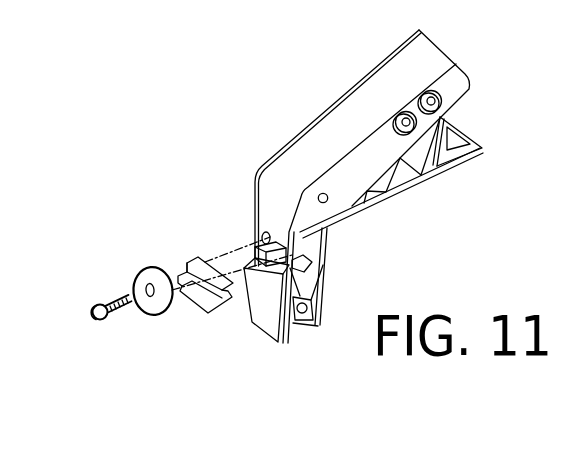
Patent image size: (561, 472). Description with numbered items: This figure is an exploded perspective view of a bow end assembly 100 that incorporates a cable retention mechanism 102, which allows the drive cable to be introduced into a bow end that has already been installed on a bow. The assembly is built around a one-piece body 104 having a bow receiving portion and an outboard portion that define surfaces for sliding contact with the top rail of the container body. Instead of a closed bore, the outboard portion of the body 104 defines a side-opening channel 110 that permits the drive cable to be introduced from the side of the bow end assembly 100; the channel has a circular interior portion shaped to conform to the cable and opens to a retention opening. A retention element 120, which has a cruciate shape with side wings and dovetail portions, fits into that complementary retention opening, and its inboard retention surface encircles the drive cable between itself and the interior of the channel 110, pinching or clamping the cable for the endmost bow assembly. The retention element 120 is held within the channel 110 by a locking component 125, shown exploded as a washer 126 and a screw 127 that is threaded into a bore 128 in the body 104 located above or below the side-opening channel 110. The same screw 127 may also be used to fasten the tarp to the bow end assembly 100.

The bow end assembly 100 is at (258, 170).
The cable retention mechanism 102 is at (163, 242).
The one-piece body 104 is at (374, 201).
The side-opening channel 110 is at (306, 266).
The retention element 120 is at (209, 314).
The locking component 125 is at (130, 324).
The washer 126 is at (134, 269).
The screw 127 is at (92, 311).
The bore 128 is at (262, 233).